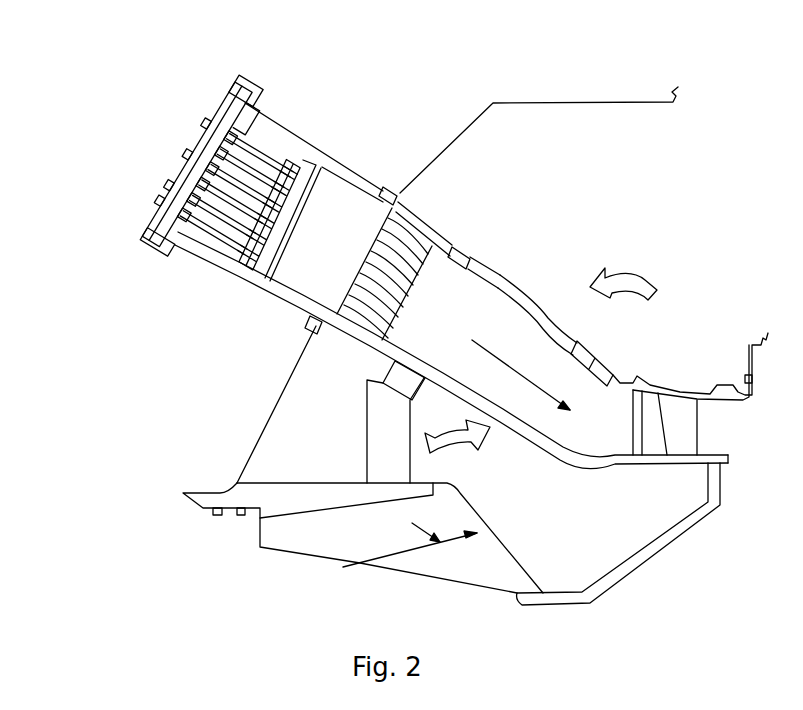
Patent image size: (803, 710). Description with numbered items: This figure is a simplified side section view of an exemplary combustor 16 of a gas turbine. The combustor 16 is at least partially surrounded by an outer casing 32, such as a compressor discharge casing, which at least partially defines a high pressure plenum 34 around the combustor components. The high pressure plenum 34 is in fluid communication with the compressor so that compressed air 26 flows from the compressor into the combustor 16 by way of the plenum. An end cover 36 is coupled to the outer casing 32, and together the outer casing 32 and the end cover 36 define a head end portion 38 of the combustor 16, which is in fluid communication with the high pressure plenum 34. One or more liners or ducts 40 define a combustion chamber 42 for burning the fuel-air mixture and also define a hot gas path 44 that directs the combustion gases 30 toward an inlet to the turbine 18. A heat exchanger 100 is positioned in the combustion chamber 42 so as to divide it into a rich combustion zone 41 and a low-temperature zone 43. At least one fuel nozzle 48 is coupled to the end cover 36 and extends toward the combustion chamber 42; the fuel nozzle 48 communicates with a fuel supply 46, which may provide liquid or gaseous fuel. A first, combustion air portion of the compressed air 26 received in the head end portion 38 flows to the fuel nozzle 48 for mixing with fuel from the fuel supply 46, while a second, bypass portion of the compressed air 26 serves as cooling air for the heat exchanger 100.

The combustor 16 is at (513, 72).
The turbine 18 is at (690, 394).
The compressed air 26 is at (632, 272).
The combustion gases 30 is at (537, 387).
The outer casing 32 is at (468, 127).
The high pressure plenum 34 is at (451, 386).
The end cover 36 is at (160, 207).
The head end portion 38 is at (217, 267).
The liners or ducts 40 is at (368, 186).
The rich combustion zone 41 is at (306, 220).
The combustion chamber 42 is at (368, 362).
The low-temperature zone 43 is at (372, 212).
The hot gas path 44 is at (495, 315).
The fuel supply 46 is at (181, 154).
The fuel nozzle 48 is at (282, 157).
The heat exchanger 100 is at (410, 228).